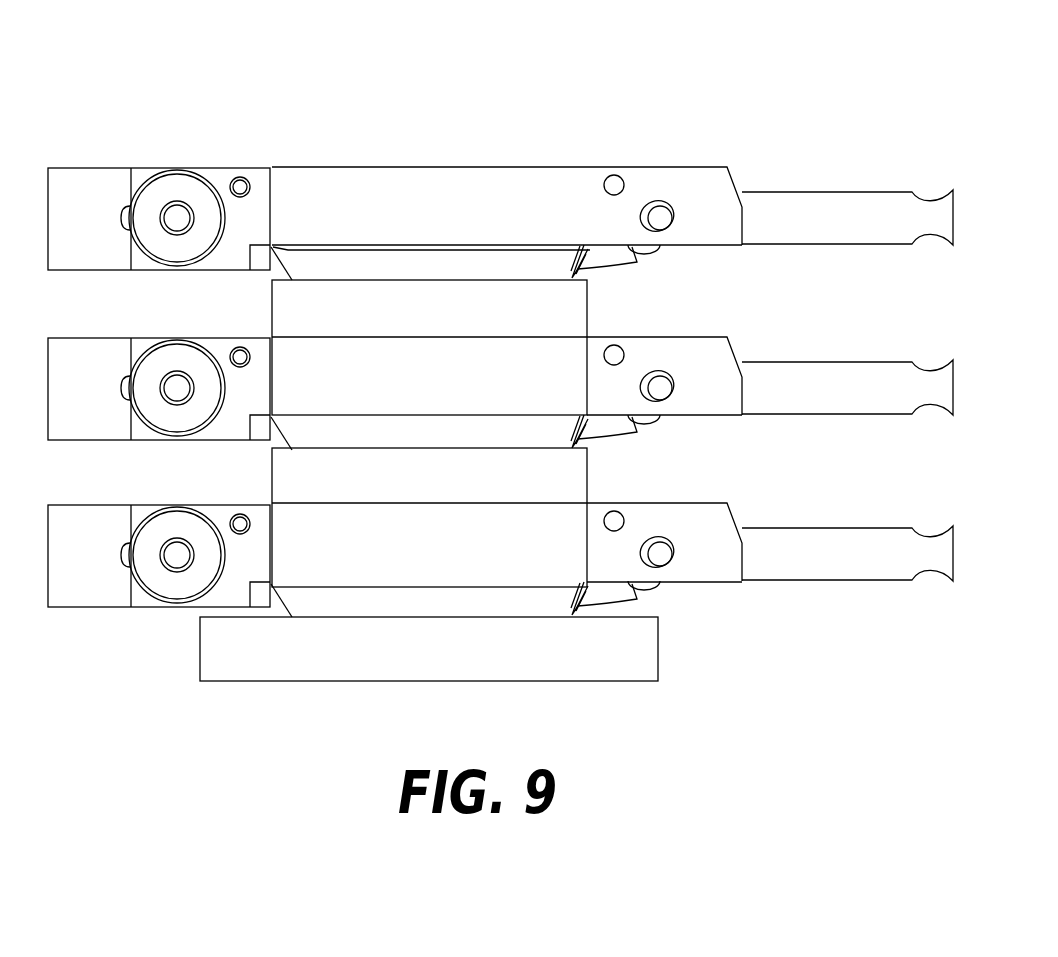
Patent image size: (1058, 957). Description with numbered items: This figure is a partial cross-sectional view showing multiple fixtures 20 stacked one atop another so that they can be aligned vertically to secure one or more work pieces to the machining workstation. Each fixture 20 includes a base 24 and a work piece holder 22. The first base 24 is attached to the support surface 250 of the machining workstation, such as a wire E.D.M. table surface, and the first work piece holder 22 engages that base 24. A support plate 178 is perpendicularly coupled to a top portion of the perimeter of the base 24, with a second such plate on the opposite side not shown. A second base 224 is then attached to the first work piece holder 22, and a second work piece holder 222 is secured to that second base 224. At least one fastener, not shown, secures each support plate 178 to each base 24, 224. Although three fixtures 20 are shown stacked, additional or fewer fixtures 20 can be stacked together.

The fixture 20 is at (542, 120).
The work piece holder 22 is at (257, 550).
The second work piece holder 222 is at (257, 380).
The support plate 178 is at (588, 322).
The second base 224 is at (566, 432).
The base 24 is at (563, 602).
The support surface 250 is at (304, 695).